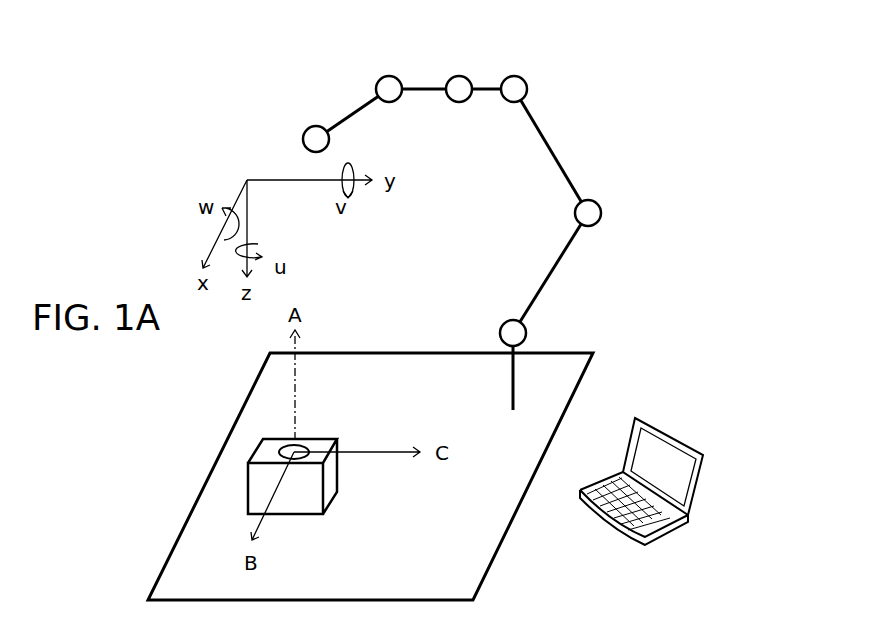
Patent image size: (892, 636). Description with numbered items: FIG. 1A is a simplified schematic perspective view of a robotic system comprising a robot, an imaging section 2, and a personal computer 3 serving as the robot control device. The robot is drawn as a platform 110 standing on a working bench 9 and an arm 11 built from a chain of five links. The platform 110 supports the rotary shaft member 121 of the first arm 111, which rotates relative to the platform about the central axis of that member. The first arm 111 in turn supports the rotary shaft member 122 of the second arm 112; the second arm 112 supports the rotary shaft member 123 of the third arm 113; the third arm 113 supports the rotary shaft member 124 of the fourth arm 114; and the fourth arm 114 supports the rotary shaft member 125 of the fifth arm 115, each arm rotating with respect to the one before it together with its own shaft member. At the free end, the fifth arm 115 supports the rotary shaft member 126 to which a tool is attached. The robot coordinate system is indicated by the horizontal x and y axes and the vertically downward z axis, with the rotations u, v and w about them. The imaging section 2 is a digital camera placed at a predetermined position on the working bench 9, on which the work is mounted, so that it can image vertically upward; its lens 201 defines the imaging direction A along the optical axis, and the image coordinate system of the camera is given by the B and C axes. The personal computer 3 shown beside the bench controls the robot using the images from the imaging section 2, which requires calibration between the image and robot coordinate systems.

The imaging section 2 is at (282, 459).
The personal computer 3 is at (645, 537).
The working bench 9 is at (158, 578).
The arm 11 is at (532, 188).
The platform 110 is at (512, 382).
The first arm 111 is at (540, 297).
The second arm 112 is at (563, 162).
The third arm 113 is at (483, 95).
The fourth arm 114 is at (420, 88).
The fifth arm 115 is at (343, 118).
The rotary shaft member 121 is at (525, 330).
The rotary shaft member 122 is at (602, 208).
The rotary shaft member 123 is at (525, 82).
The rotary shaft member 124 is at (467, 77).
The rotary shaft member 125 is at (381, 81).
The rotary shaft member 126 is at (306, 132).
The lens 201 is at (292, 453).